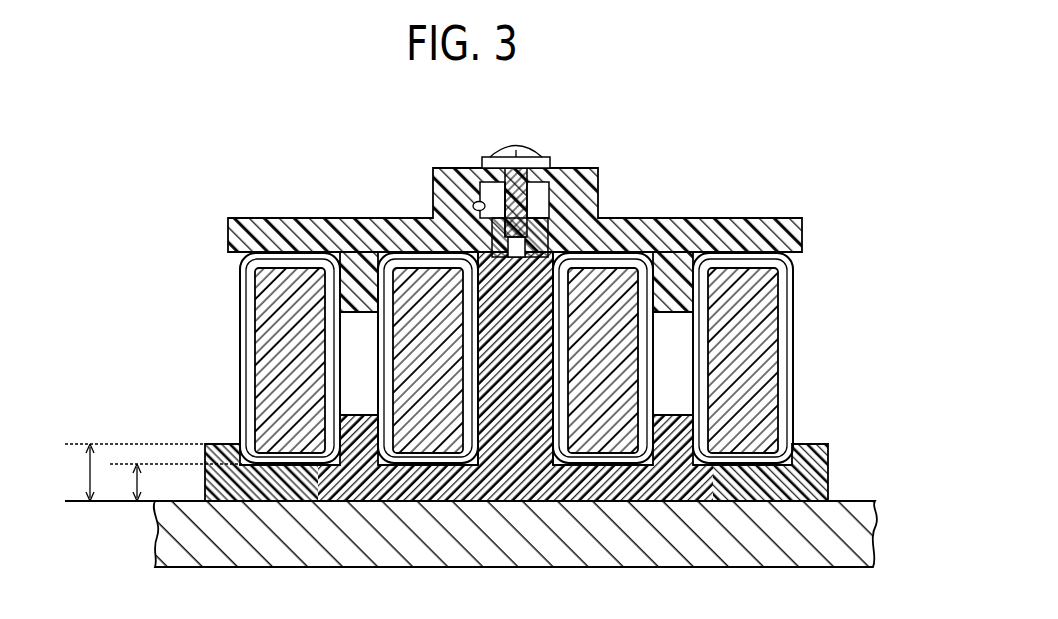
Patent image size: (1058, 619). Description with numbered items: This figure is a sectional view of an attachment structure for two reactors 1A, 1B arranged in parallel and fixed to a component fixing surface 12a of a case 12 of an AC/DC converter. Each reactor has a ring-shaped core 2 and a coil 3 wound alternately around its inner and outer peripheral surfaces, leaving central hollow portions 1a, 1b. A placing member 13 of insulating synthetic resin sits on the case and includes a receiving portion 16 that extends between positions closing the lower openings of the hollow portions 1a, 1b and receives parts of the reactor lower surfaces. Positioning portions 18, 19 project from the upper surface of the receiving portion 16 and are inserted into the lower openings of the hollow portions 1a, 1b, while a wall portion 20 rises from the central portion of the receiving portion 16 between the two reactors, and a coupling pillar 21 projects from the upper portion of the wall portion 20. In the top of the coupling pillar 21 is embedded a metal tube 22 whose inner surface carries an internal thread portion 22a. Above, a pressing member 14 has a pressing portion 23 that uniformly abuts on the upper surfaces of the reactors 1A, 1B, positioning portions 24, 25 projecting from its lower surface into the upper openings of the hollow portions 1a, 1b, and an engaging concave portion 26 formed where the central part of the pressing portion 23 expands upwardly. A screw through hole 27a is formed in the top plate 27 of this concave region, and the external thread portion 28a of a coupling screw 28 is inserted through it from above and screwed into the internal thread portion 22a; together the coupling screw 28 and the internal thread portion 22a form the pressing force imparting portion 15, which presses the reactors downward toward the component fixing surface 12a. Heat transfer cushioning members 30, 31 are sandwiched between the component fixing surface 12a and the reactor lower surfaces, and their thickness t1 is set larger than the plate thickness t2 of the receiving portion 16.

The reactor 1A is at (243, 358).
The reactor 1B is at (790, 352).
The hollow portion 1a is at (359, 341).
The hollow portion 1b is at (673, 341).
The ring-shaped core 2 is at (290, 393).
The coil 3 is at (241, 318).
The case 12 is at (860, 536).
The component fixing surface 12a is at (845, 499).
The placing member 13 is at (516, 431).
The pressing member 14 is at (513, 203).
The pressing force imparting portion 15 is at (509, 176).
The receiving portion 16 is at (427, 476).
The positioning portion 18 is at (355, 462).
The positioning portion 19 is at (673, 443).
The wall portion 20 is at (519, 337).
The coupling pillar 21 is at (532, 207).
The metal tube 22 is at (488, 236).
The internal thread portion 22a is at (540, 182).
The pressing portion 23 is at (672, 230).
The positioning portion 24 is at (342, 270).
The positioning portion 25 is at (676, 286).
The engaging concave portion 26 is at (474, 206).
The top plate 27 is at (522, 178).
The screw through hole 27a is at (503, 186).
The coupling screw 28 is at (488, 162).
The external thread portion 28a is at (482, 182).
The heat transfer cushioning member 30 is at (273, 497).
The heat transfer cushioning member 31 is at (766, 492).
The thickness of heat transfer cushioning members t1 is at (135, 472).
The plate thickness of receiving portion t2 is at (137, 482).